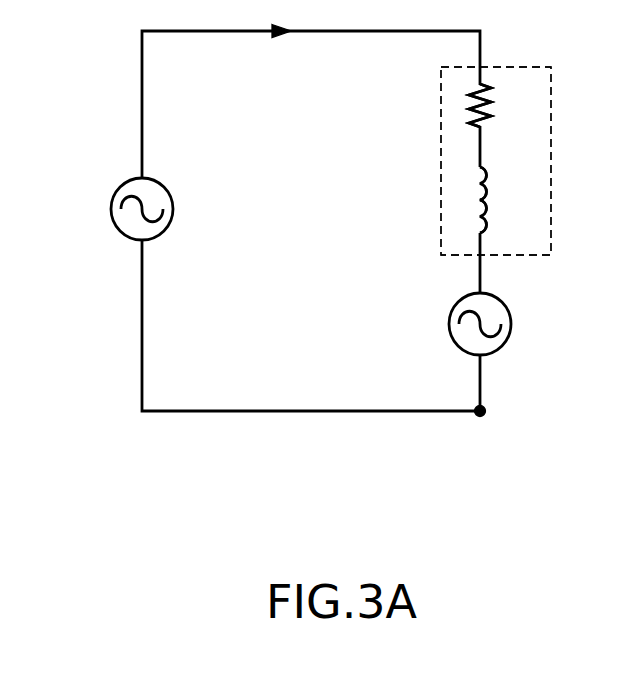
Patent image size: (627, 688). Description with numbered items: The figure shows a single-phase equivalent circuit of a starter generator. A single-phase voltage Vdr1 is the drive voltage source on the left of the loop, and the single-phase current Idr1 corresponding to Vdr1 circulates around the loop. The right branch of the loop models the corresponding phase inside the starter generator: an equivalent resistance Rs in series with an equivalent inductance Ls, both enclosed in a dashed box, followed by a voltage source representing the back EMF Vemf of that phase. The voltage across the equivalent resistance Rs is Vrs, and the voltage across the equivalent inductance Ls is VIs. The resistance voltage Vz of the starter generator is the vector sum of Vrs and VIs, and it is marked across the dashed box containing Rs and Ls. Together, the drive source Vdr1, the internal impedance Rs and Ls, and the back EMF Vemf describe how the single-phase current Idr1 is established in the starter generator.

The single-phase current Idr1 is at (281, 49).
The single-phase voltage Vdr1 is at (103, 209).
The equivalent resistance Rs is at (497, 105).
The voltage across equivalent resistance Vrs is at (456, 106).
The equivalent inductance Ls is at (502, 200).
The voltage across equivalent inductance VIs is at (456, 205).
The resistance voltage Vz is at (575, 239).
The back EMF Vemf is at (543, 366).